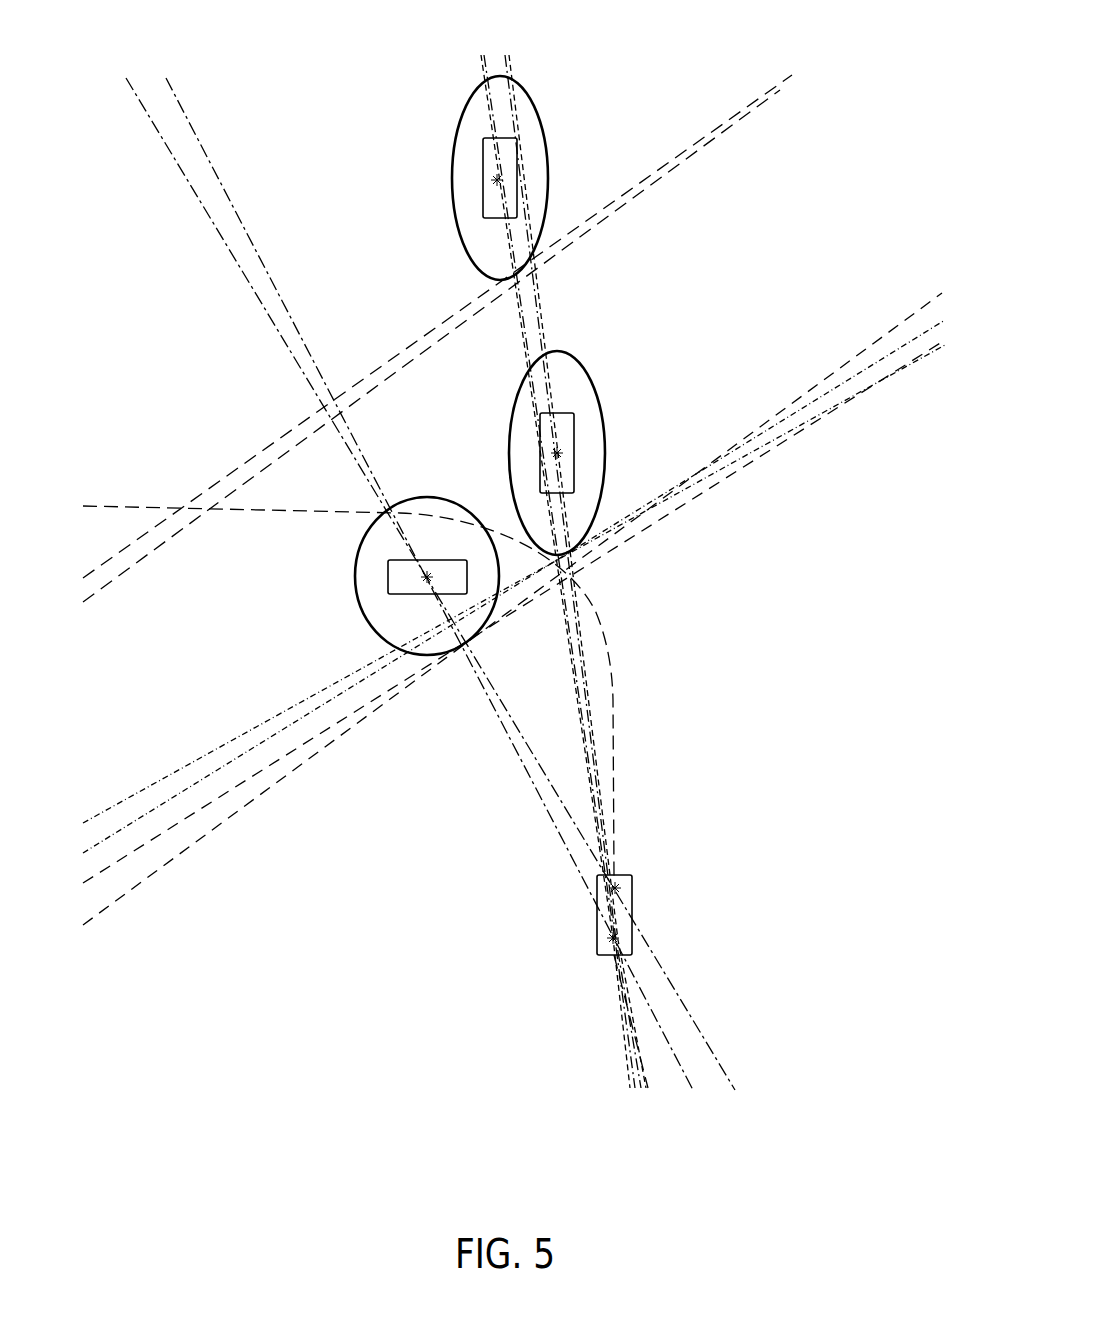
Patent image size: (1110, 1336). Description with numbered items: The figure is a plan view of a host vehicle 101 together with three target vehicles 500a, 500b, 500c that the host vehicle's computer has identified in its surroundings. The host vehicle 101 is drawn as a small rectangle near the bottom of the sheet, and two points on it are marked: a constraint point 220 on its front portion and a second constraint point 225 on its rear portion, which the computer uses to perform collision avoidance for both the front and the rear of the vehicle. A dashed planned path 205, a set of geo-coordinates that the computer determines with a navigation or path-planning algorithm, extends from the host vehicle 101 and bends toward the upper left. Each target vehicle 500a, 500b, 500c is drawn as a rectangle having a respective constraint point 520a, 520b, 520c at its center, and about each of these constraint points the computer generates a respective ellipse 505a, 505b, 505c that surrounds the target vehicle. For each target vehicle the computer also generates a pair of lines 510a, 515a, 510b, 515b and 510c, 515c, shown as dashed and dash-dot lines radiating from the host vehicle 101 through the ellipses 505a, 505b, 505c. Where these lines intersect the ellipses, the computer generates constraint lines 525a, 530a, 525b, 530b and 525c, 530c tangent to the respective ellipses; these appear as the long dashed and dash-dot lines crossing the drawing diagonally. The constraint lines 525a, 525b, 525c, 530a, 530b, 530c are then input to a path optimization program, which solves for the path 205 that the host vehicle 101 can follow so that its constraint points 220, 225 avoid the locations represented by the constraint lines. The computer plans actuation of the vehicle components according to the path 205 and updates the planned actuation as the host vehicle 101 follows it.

The host vehicle 101 is at (597, 935).
The planned path 205 is at (612, 672).
The constraint point 220 is at (619, 878).
The second constraint point 225 is at (611, 941).
The target vehicle 500a is at (483, 157).
The target vehicle 500b is at (575, 423).
The target vehicle 500c is at (387, 585).
The ellipse 505a is at (466, 100).
The ellipse 505b is at (587, 365).
The ellipse 505c is at (430, 497).
The line 510a is at (485, 72).
The line 510b is at (545, 325).
The line 510c is at (285, 307).
The line 515a is at (490, 118).
The line 515b is at (533, 313).
The line 515c is at (280, 331).
The constraint point 520a is at (510, 173).
The constraint point 520b is at (573, 452).
The constraint point 520c is at (418, 572).
The constraint line 525a is at (743, 102).
The constraint line 525b is at (864, 355).
The constraint line 525c is at (218, 802).
The constraint line 530a is at (702, 141).
The constraint line 530b is at (780, 432).
The constraint line 530c is at (288, 773).